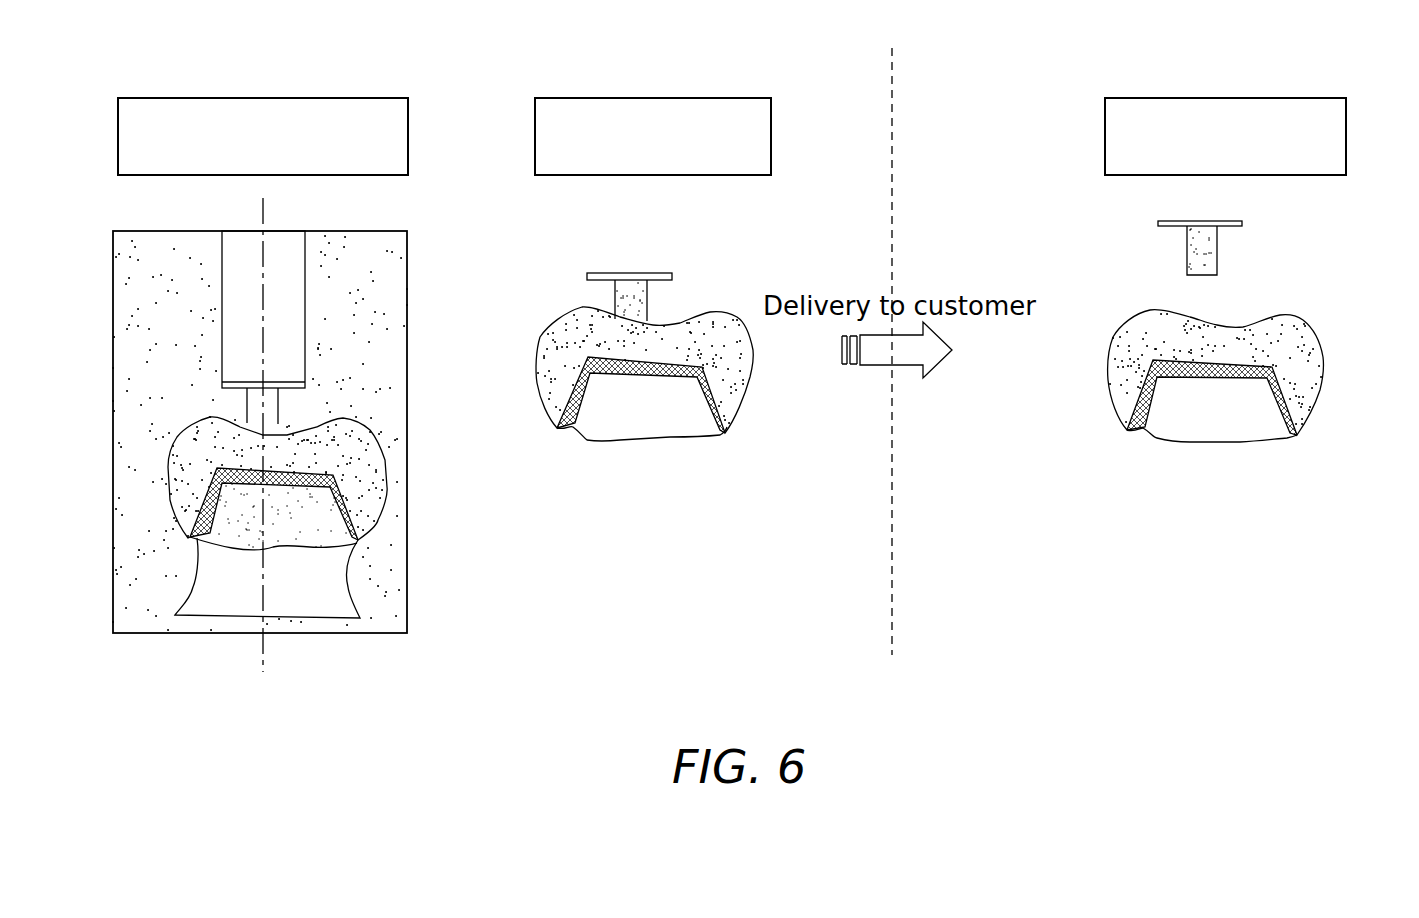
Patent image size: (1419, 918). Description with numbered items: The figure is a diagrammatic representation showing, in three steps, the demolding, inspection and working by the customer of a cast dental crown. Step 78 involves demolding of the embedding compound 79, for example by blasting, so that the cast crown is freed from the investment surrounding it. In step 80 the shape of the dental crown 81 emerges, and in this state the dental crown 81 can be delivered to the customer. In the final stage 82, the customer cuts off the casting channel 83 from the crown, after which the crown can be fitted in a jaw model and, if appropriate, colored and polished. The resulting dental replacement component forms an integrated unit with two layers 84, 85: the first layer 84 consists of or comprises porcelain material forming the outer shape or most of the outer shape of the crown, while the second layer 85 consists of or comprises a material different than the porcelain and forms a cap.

The demolding step 78 is at (330, 108).
The embedding compound 79 is at (389, 277).
The inspection step 80 is at (696, 108).
The dental crown 81 is at (716, 300).
The press platen 82 is at (1240, 107).
The casting channel 83 is at (1208, 248).
The first layer 84 is at (1320, 363).
The second layer 85 is at (1275, 413).